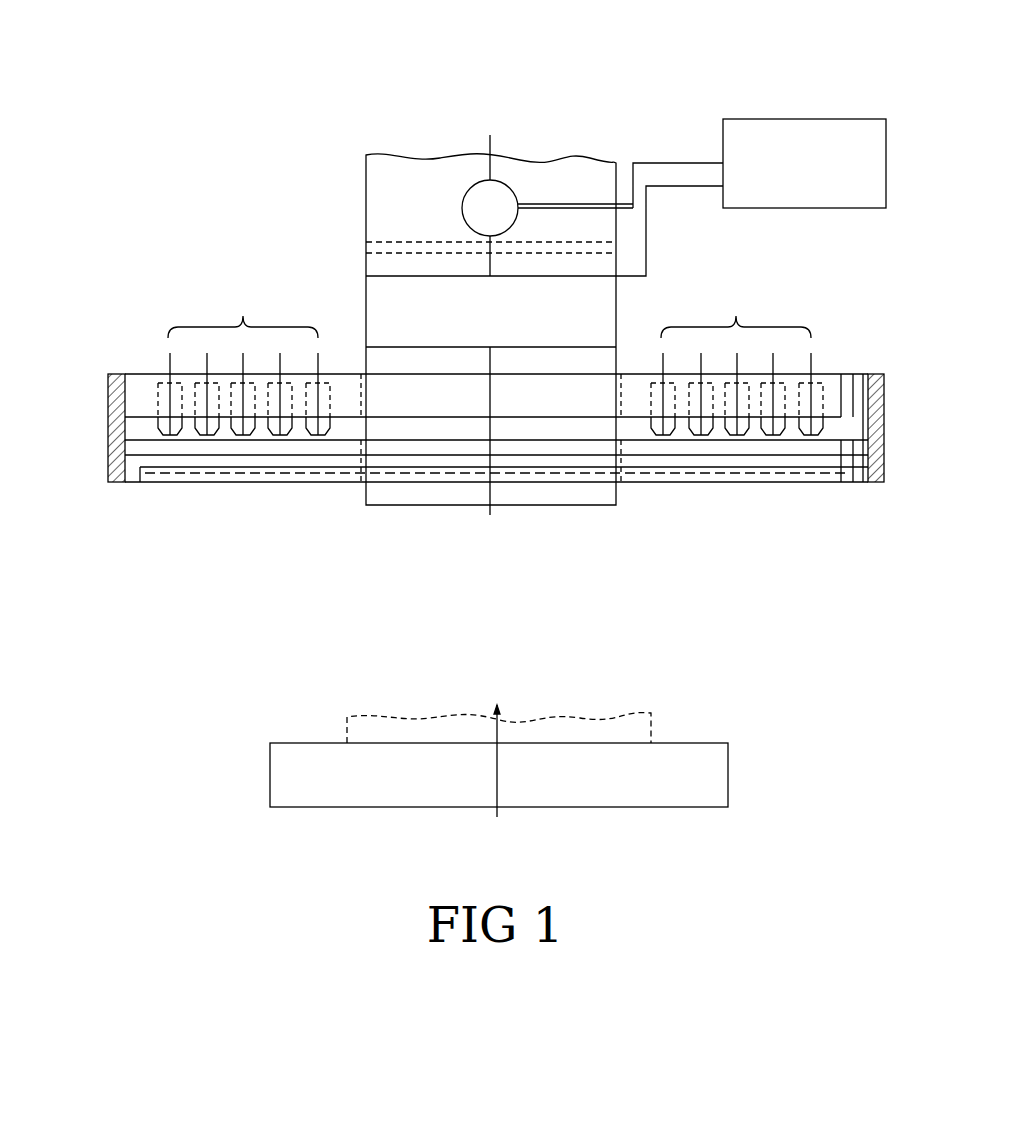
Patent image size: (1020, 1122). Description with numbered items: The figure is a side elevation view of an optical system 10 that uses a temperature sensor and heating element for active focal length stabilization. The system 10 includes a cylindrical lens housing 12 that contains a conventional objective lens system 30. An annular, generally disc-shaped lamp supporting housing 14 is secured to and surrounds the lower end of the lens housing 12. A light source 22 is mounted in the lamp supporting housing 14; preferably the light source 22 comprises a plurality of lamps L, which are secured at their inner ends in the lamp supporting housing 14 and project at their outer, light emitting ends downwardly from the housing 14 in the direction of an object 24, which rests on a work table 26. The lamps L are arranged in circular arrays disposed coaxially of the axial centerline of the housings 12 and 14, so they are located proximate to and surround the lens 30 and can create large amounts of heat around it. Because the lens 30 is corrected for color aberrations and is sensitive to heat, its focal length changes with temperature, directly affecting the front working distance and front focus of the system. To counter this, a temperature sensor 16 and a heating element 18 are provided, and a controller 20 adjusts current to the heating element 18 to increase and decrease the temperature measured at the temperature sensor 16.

The system 10 is at (340, 96).
The lens housing 12 is at (366, 200).
The lamp supporting housing 14 is at (108, 398).
The temperature sensor 16 is at (514, 158).
The heating element 18 is at (616, 302).
The controller 20 is at (804, 163).
The light source 22 is at (188, 295).
The object 24 is at (375, 733).
The work table 26 is at (280, 773).
The objective lens system 30 is at (366, 253).